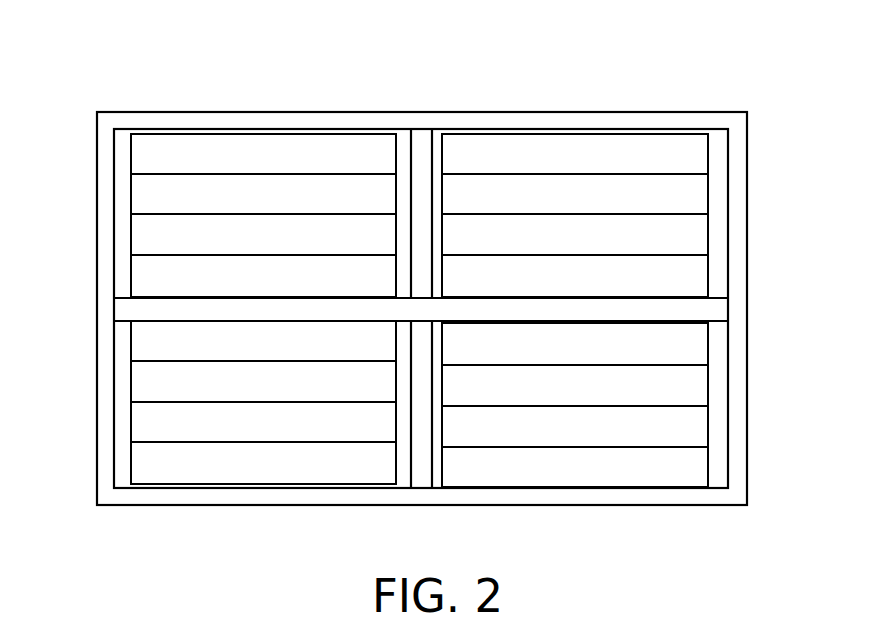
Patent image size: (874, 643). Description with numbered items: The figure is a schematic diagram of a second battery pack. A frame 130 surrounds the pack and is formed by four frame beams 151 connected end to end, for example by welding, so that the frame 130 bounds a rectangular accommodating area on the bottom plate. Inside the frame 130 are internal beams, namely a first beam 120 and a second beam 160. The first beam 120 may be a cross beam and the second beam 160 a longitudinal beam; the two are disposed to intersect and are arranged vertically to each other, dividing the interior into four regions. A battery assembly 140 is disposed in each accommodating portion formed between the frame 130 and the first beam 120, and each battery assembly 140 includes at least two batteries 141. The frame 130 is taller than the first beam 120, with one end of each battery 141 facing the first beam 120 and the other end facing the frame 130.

The first beam 120 is at (422, 145).
The frame 130 is at (107, 283).
The battery assembly 140 is at (484, 250).
The battery 141 is at (609, 152).
The frame beam 151 is at (233, 120).
The second beam 160 is at (717, 310).